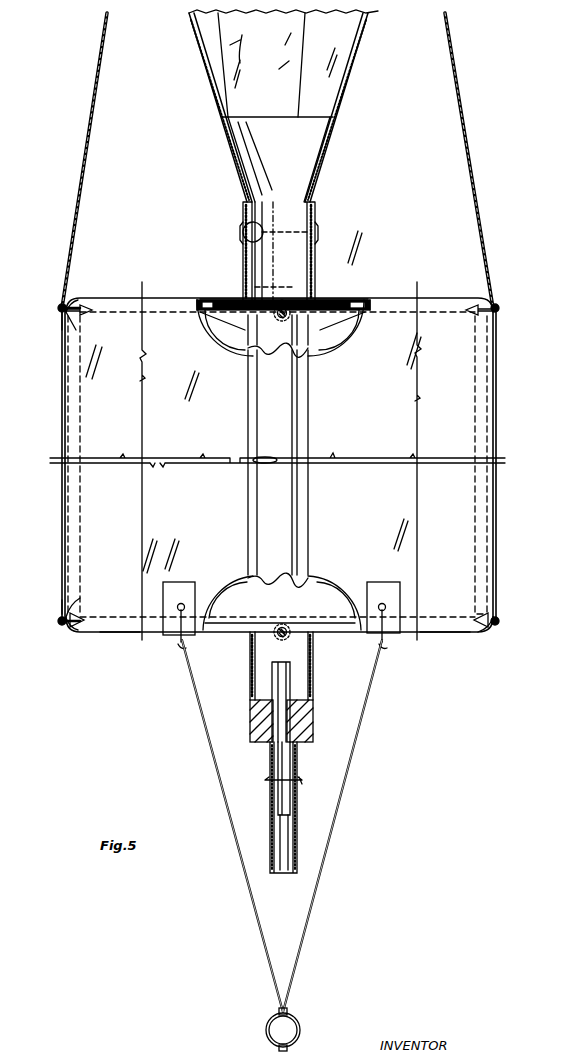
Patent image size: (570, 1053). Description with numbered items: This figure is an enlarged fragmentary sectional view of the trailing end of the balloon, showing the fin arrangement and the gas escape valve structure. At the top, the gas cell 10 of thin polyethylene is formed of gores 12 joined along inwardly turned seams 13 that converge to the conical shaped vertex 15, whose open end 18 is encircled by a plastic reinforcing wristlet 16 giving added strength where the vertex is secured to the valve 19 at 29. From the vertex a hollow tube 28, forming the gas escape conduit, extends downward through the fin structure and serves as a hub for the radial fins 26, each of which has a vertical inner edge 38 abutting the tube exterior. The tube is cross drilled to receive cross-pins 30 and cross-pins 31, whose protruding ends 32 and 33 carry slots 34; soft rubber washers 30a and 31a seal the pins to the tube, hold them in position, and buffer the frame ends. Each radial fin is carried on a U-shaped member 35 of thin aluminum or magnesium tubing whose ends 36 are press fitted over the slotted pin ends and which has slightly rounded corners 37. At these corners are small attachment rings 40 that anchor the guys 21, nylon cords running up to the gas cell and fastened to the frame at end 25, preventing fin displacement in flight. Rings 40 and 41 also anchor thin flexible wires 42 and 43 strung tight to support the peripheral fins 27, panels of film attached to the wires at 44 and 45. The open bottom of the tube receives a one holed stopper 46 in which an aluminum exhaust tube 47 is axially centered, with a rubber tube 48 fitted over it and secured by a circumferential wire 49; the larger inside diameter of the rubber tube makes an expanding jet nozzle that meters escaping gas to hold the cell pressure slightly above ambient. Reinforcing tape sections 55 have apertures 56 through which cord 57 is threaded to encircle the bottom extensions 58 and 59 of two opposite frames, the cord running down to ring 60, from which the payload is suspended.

The gas cell 10 is at (377, 46).
The gores 12 is at (312, 62).
The seams 13 is at (302, 37).
The conical shaped vertex 15 is at (334, 136).
The plastic reinforcing wristlet 16 is at (317, 226).
The open end 18 is at (318, 230).
The valve 19 is at (305, 283).
The guys 21 is at (459, 72).
The end 25 is at (252, 467).
The radial fins 26 is at (110, 421).
The peripheral fins 27 is at (492, 483).
The tube 28 is at (314, 665).
The attachment point 29 is at (243, 231).
The cross-pins 30 is at (312, 590).
The washers 30a is at (330, 600).
The cross-pins 31 is at (279, 637).
The washers 31a is at (262, 640).
The protruding end 32 is at (340, 298).
The protruding end 33 is at (218, 299).
The slots 34 is at (345, 318).
The U-shaped member 35 is at (445, 288).
The ends 36 is at (345, 612).
The rounded corners 37 is at (72, 634).
The vertical inner edge 38 is at (247, 520).
The attachment rings 40 is at (484, 314).
The rings 41 is at (488, 634).
The thin flexible wire 42 is at (58, 622).
The thin flexible wire 43 is at (60, 310).
The attachment 44 is at (62, 614).
The attachment 45 is at (62, 320).
The one holed stopper 46 is at (258, 745).
The exhaust tube 47 is at (272, 688).
The rubber tube 48 is at (298, 842).
The circumferential wire 49 is at (301, 778).
The reinforcing tape sections 55 is at (395, 640).
The apertures 56 is at (385, 604).
The cord 57 is at (366, 706).
The bottom extension 58 is at (120, 634).
The bottom extension 59 is at (445, 634).
The ring 60 is at (298, 1020).